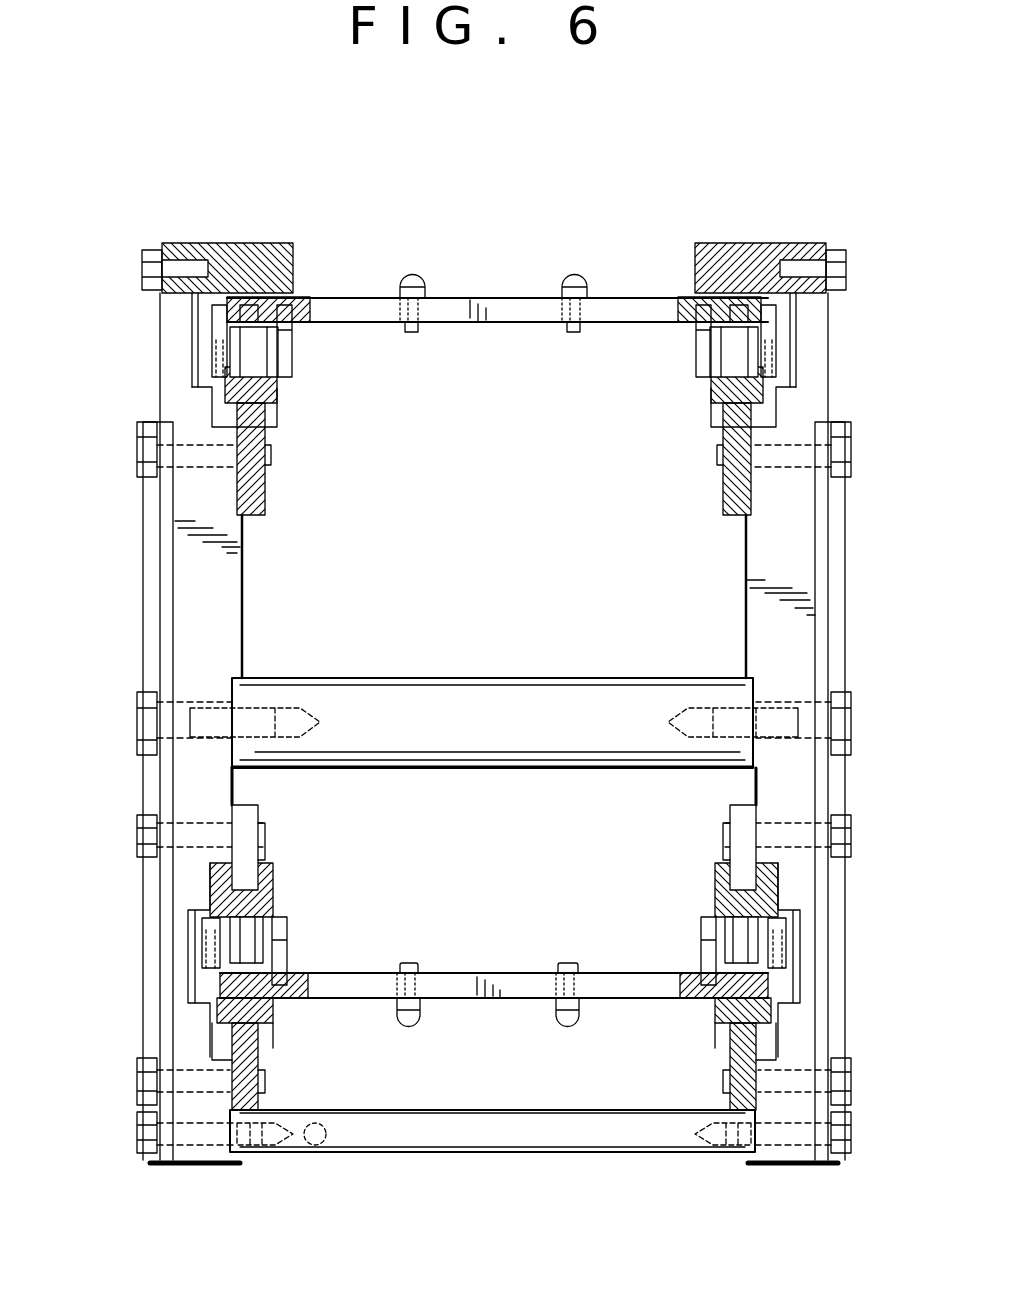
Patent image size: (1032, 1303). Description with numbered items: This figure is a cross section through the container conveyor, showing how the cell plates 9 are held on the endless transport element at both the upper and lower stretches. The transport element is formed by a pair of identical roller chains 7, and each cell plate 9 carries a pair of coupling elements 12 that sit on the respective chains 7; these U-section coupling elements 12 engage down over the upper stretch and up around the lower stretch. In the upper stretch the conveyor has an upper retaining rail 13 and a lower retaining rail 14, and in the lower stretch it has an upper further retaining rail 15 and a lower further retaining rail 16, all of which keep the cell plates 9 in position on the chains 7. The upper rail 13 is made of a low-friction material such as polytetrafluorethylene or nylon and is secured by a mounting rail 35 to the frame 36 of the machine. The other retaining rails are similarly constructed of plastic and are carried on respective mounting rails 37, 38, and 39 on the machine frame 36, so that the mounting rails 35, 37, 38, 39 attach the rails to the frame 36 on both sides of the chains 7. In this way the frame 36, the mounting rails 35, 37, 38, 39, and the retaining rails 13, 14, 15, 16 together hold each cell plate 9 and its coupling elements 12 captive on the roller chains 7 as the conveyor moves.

The roller chain 7 is at (243, 353).
The cell plate 9 is at (625, 313).
The coupling element 12 is at (288, 377).
The upper retaining rail 13 is at (190, 287).
The lower retaining rail 14 is at (227, 393).
The upper further retaining rail 15 is at (210, 890).
The lower further retaining rail 16 is at (217, 1012).
The mounting rail 35 is at (260, 258).
The frame 36 is at (775, 630).
The mounting rail 37 is at (250, 493).
The mounting rail 38 is at (245, 857).
The mounting rail 39 is at (258, 1052).